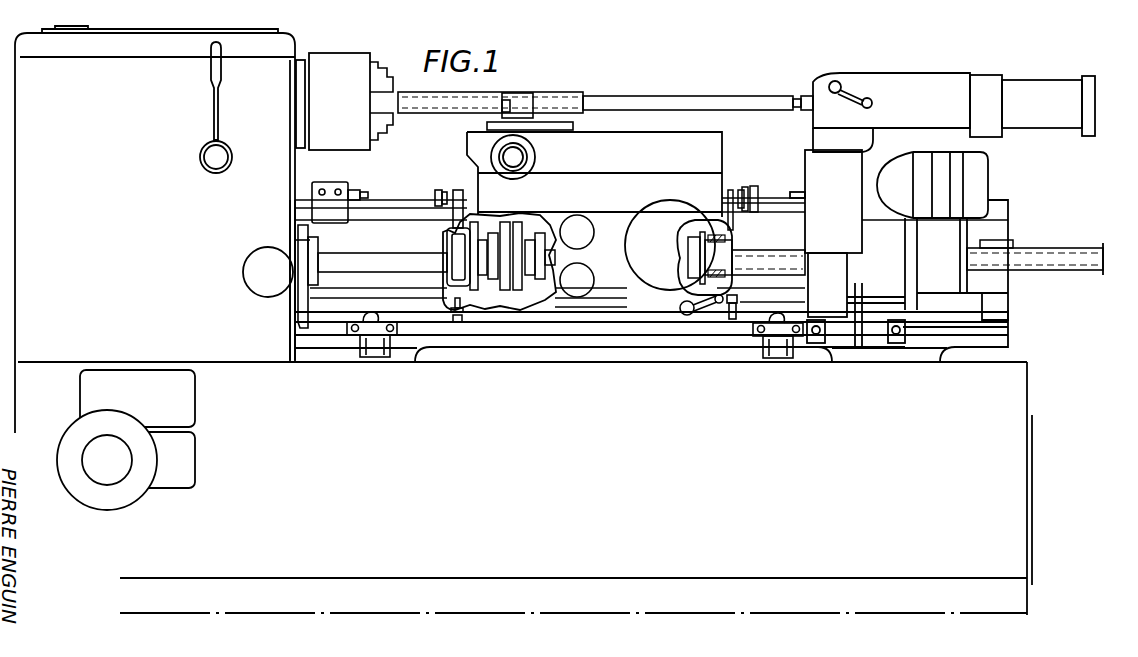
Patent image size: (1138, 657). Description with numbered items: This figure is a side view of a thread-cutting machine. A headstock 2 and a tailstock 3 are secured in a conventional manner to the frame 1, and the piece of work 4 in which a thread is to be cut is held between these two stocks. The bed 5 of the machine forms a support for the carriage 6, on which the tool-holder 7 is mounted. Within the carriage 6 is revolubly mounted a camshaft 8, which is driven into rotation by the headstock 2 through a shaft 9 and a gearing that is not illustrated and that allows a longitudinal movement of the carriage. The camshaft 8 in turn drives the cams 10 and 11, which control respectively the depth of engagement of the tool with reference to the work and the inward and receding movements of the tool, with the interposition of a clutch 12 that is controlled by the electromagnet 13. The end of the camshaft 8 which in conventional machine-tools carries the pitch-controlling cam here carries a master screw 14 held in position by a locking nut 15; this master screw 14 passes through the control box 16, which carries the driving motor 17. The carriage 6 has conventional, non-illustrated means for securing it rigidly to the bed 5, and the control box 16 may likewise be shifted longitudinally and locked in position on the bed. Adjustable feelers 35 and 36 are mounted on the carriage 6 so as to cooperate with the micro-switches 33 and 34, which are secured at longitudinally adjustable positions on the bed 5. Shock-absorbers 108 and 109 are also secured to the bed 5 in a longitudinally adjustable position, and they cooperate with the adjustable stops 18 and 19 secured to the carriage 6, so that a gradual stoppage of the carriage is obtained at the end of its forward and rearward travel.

The frame 1 is at (1002, 473).
The headstock 2 is at (155, 229).
The tailstock 3 is at (905, 95).
The piece of work 4 is at (620, 105).
The bed 5 is at (660, 345).
The carriage 6 is at (652, 175).
The tool-holder 7 is at (527, 105).
The camshaft 8 is at (555, 256).
The shaft 9 is at (375, 265).
The cam 10 is at (510, 292).
The cam 11 is at (522, 292).
The clutch 12 is at (503, 216).
The electromagnet 13 is at (465, 228).
The master screw 14 is at (752, 260).
The locking nut 15 is at (742, 192).
The control box 16 is at (938, 250).
The driving motor 17 is at (957, 178).
The adjustable stop 18 is at (438, 192).
The adjustable stop 19 is at (756, 194).
The micro-switch 33 is at (375, 350).
The micro-switch 34 is at (783, 355).
The adjustable feeler 35 is at (462, 322).
The adjustable feeler 36 is at (726, 320).
The shock-absorber 108 is at (338, 180).
The shock-absorber 109 is at (822, 172).